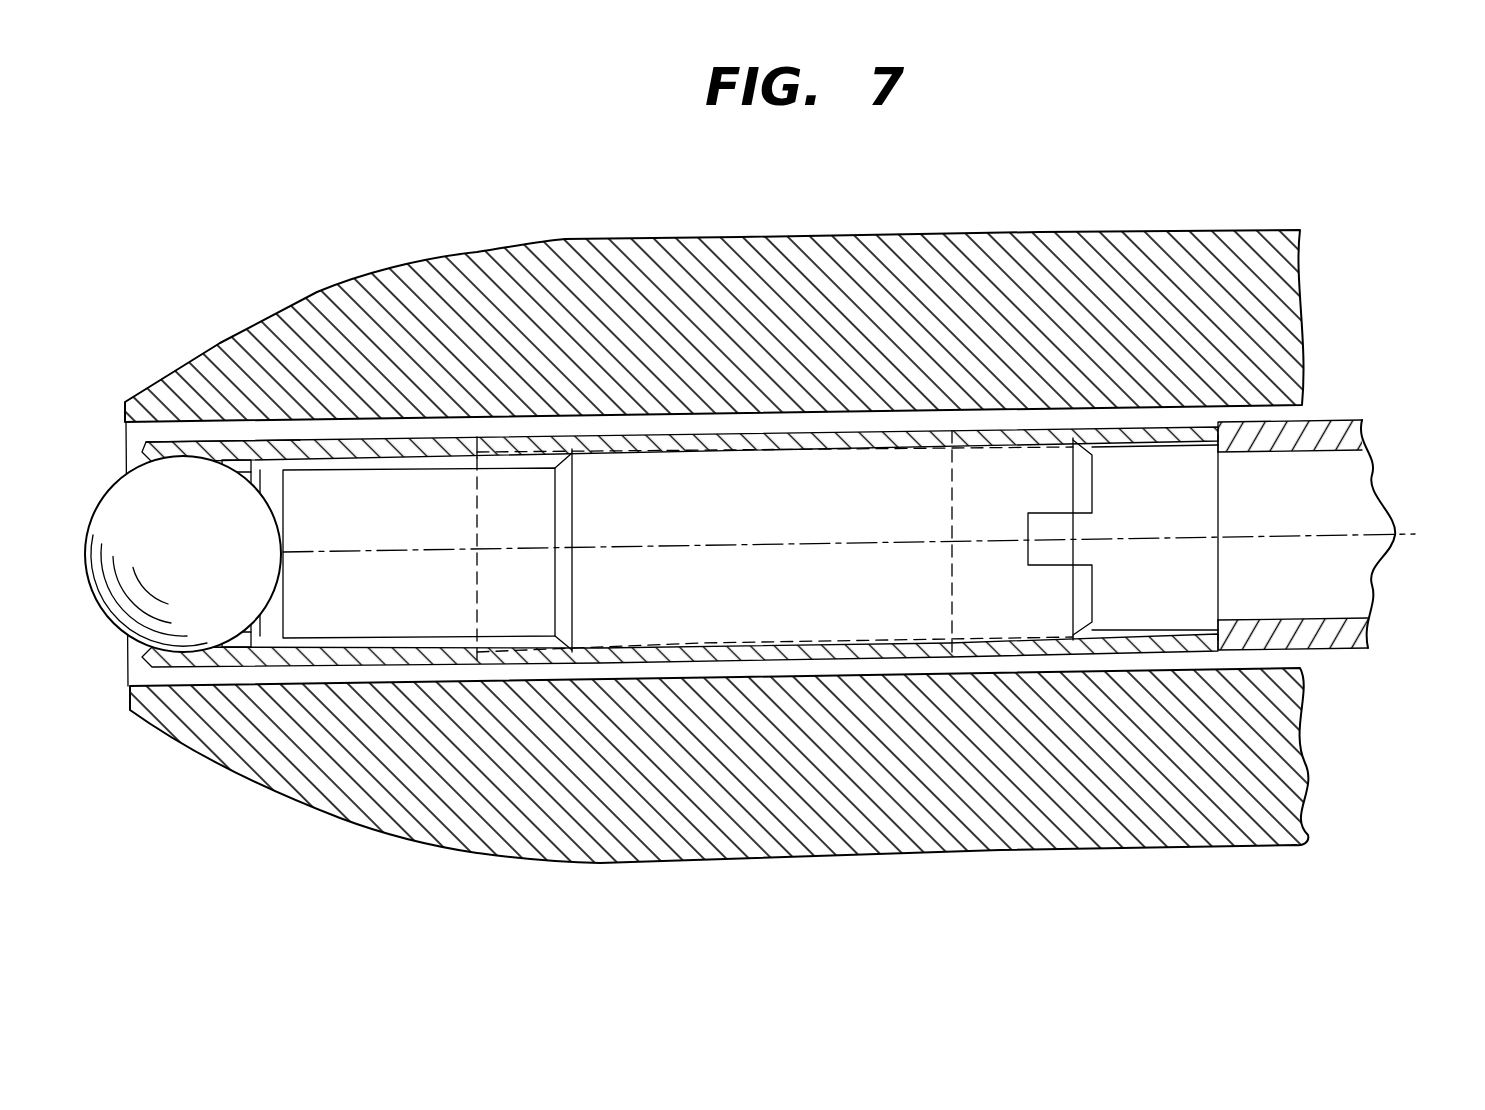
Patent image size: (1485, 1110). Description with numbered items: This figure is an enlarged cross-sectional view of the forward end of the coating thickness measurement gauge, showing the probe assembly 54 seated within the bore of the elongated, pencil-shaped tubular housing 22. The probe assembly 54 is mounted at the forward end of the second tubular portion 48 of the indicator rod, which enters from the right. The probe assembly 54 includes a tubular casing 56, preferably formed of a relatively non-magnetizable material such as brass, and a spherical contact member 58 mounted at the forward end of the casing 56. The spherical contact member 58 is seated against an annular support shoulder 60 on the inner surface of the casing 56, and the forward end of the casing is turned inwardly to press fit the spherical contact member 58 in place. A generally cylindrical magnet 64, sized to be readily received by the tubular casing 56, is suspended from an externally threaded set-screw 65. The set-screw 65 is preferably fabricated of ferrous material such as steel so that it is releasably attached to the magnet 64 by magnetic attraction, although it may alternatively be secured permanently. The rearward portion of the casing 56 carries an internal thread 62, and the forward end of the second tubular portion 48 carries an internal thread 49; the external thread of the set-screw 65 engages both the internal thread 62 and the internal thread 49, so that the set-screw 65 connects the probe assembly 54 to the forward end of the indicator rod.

The tubular housing 22 is at (1100, 765).
The second tubular portion of the indicator rod 48 is at (1338, 650).
The internal thread 49 is at (1010, 448).
The probe assembly 54 is at (712, 435).
The tubular casing 56 is at (227, 443).
The spherical contact member 58 is at (223, 537).
The annular support shoulder 60 is at (242, 462).
The internal thread 62 is at (480, 445).
The magnet 64 is at (382, 582).
The set-screw 65 is at (848, 508).